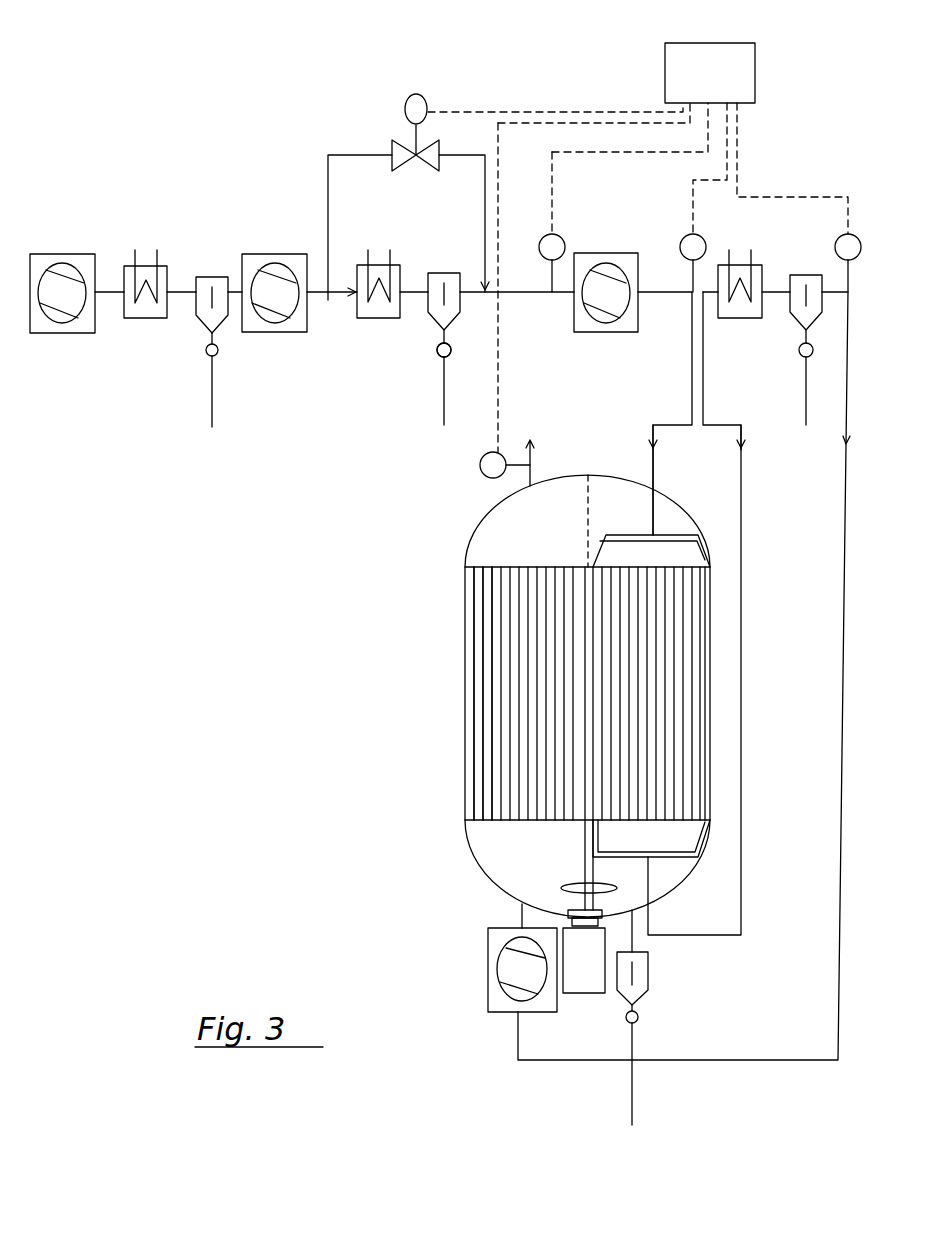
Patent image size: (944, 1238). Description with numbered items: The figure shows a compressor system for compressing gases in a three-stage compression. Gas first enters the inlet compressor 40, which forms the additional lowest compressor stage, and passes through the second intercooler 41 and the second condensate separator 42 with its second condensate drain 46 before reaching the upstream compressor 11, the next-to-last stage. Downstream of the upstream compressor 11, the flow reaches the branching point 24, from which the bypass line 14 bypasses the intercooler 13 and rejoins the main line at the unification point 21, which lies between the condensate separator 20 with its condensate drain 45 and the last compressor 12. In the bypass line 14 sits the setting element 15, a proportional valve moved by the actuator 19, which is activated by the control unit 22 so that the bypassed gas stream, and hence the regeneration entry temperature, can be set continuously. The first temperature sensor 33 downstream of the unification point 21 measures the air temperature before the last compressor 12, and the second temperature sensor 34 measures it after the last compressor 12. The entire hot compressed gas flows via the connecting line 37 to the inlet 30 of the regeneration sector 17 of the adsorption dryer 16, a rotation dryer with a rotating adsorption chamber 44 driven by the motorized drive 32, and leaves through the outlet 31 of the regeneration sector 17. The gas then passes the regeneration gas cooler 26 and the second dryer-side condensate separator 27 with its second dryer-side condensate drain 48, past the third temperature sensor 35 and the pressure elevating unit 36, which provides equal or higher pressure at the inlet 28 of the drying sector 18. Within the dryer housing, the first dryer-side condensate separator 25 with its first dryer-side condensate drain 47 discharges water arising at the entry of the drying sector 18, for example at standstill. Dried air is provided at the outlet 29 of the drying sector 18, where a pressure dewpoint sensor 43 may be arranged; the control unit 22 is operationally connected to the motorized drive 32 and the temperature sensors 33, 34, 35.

The upstream compressor 11 is at (292, 334).
The last compressor 12 is at (622, 334).
The intercooler 13 is at (370, 318).
The bypass line 14 is at (362, 155).
The setting element 15 is at (406, 174).
The adsorption dryer 16 is at (427, 608).
The regeneration sector 17 is at (626, 566).
The drying sector 18 is at (486, 744).
The actuator 19 is at (426, 106).
The condensate separator 20 is at (447, 273).
The unification point 21 is at (453, 352).
The control unit 22 is at (722, 92).
The branching point 24 is at (332, 290).
The first dryer-side condensate separator 25 is at (652, 970).
The regeneration gas cooler 26 is at (742, 320).
The second dryer-side condensate separator 27 is at (797, 274).
The inlet of the drying sector 28 is at (517, 906).
The outlet of the drying sector 29 is at (537, 482).
The inlet of the regeneration sector 30 is at (662, 535).
The outlet of the regeneration sector 31 is at (652, 864).
The motorized drive 32 is at (587, 998).
The first temperature sensor 33 is at (556, 234).
The second temperature sensor 34 is at (683, 236).
The third temperature sensor 35 is at (856, 232).
The pressure elevating unit 36 is at (487, 1006).
The connecting line 37 is at (689, 395).
The inlet compressor 40 is at (78, 335).
The second intercooler 41 is at (160, 266).
The second condensate separator 42 is at (212, 318).
The pressure dewpoint sensor 43 is at (480, 474).
The rotating adsorption chamber 44 is at (490, 666).
The condensate drain 45 is at (440, 358).
The second condensate drain 46 is at (218, 354).
The first dryer-side condensate drain 47 is at (645, 1020).
The second dryer-side condensate drain 48 is at (797, 358).